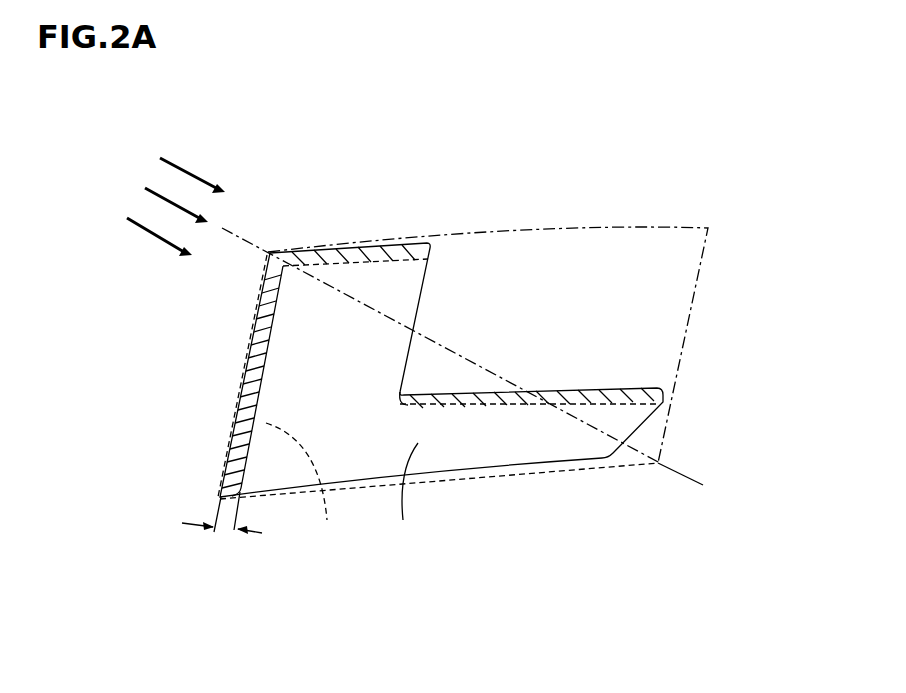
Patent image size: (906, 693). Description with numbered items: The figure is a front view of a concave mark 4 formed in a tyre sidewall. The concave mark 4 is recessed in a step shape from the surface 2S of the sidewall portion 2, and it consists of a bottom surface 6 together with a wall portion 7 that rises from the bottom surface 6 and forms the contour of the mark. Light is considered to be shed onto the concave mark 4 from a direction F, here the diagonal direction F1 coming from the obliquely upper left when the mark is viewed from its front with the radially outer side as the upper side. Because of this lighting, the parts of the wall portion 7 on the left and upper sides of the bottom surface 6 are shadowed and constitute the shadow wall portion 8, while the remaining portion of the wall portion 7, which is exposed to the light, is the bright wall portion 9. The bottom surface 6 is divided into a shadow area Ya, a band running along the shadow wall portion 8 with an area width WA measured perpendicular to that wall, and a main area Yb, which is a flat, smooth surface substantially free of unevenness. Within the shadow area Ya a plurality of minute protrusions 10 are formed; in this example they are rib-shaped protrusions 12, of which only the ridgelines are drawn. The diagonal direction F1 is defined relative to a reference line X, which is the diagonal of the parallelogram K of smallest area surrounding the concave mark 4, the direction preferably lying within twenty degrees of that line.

The sidewall portion 2 is at (451, 407).
The surface of the sidewall portion 2S is at (682, 572).
The concave mark 4 is at (562, 291).
The bottom surface 6 is at (346, 510).
The wall portion 7 is at (258, 348).
The shadow wall portion 8 is at (473, 289).
The bright wall portion 9 is at (420, 279).
The minute protrusions 10 is at (404, 219).
The rib-shaped protrusions 12 is at (395, 246).
The parallelogram K is at (692, 311).
The reference line X is at (680, 473).
The direction F is at (223, 189).
The diagonal direction F1 is at (192, 172).
The area width WA is at (222, 527).
The shadow area Ya is at (303, 485).
The main area Yb is at (403, 495).